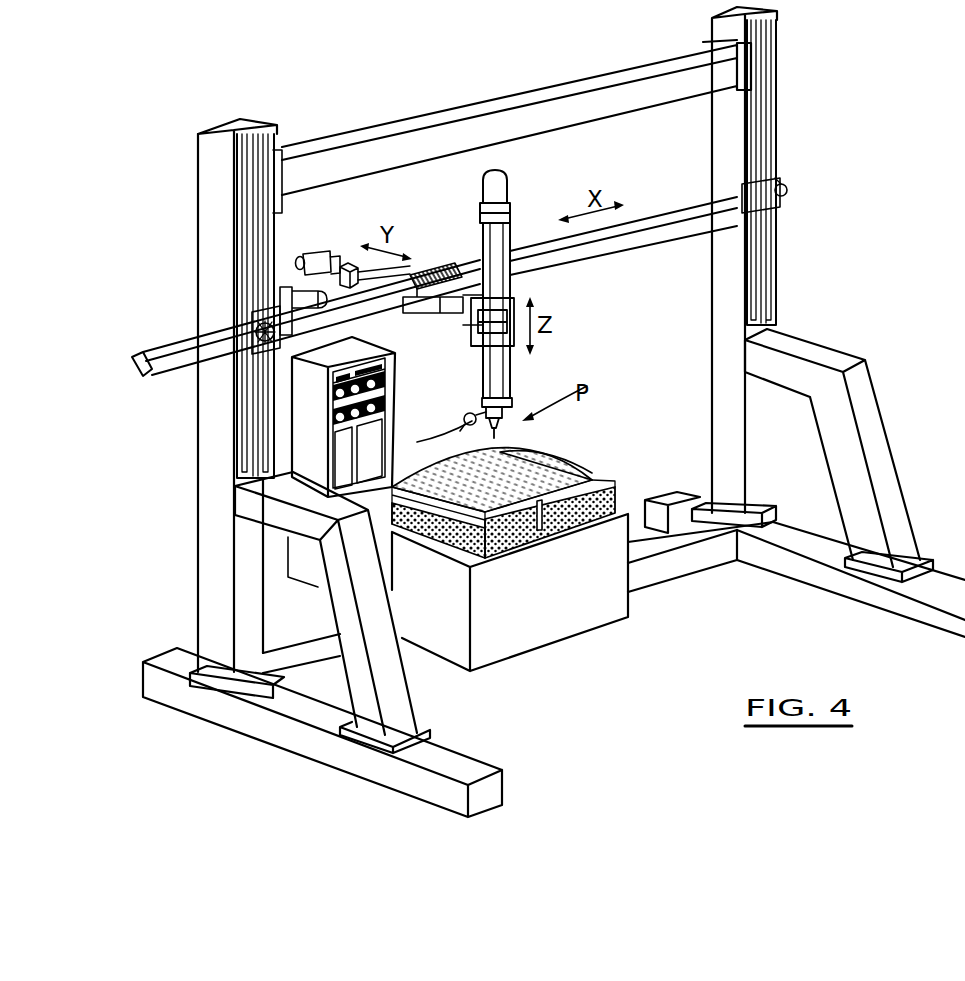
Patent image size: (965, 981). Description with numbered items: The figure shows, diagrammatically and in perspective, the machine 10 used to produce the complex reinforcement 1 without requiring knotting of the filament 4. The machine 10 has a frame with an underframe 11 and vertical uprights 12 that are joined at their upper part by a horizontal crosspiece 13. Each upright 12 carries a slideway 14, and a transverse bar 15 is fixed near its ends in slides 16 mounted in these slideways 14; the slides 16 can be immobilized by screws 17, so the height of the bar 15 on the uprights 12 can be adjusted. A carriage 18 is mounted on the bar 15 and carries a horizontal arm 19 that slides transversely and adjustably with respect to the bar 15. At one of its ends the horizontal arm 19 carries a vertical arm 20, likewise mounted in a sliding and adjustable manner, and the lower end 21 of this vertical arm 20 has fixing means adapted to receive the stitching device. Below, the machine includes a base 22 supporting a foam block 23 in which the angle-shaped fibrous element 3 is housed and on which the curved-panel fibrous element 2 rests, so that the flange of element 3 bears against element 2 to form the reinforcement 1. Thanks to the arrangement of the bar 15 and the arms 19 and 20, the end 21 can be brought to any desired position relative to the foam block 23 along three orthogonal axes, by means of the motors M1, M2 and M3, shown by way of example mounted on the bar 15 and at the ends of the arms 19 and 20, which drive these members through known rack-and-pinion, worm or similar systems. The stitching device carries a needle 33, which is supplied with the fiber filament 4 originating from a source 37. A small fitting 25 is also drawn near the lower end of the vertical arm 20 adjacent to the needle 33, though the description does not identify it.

The complex reinforcement 1 is at (602, 470).
The fibrous element 2 is at (437, 478).
The fibrous element 3 is at (548, 520).
The filament 4 is at (437, 438).
The machine 10 is at (198, 133).
The underframe 11 is at (892, 502).
The vertical uprights 12 is at (208, 177).
The horizontal crosspiece 13 is at (427, 118).
The slideway 14 is at (254, 236).
The transverse bar 15 is at (613, 240).
The slides 16 is at (232, 313).
The screws 17 is at (778, 200).
The carriage 18 is at (438, 268).
The horizontal arm 19 is at (346, 262).
The vertical arm 20 is at (503, 242).
The lower end 21 is at (502, 386).
The base 22 is at (558, 620).
The foam block 23 is at (520, 535).
The nozzle fitting 25 is at (466, 416).
The needle 33 is at (516, 455).
The source 37 is at (300, 414).
The motor M1 is at (340, 299).
The motor M2 is at (300, 257).
The motor M3 is at (504, 192).